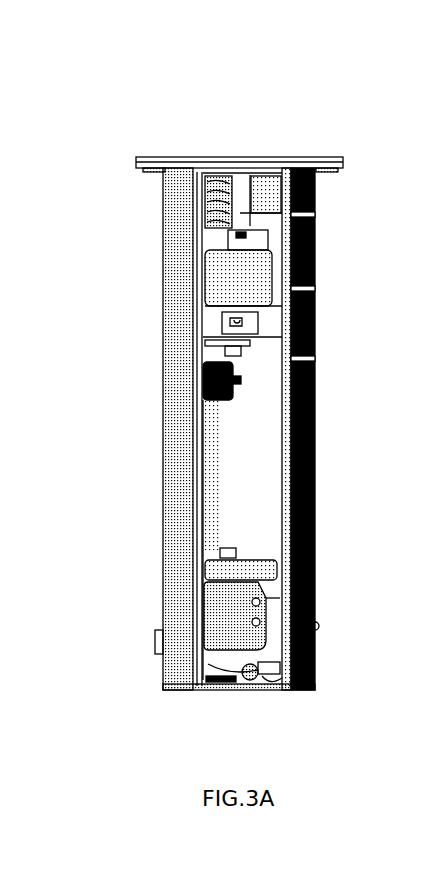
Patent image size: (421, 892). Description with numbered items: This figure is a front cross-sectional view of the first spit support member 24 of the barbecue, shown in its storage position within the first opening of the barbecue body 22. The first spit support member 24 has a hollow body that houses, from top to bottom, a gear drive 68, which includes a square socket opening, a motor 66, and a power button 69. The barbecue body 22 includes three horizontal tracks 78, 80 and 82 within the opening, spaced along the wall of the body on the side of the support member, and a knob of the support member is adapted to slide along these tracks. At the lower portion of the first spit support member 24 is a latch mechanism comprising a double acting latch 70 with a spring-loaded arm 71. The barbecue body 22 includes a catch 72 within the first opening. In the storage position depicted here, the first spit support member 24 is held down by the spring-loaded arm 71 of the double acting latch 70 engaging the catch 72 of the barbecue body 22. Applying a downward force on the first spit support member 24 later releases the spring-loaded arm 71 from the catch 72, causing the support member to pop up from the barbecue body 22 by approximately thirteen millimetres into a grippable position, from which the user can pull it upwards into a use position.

The barbecue body 22 is at (198, 372).
The first spit support member 24 is at (265, 156).
The motor 66 is at (235, 277).
The gear drive 68 is at (215, 194).
The power button 69 is at (215, 380).
The double acting latch 70 is at (225, 627).
The spring-loaded arm 71 is at (245, 676).
The catch 72 is at (268, 675).
The horizontal track 78 is at (310, 358).
The horizontal track 80 is at (310, 288).
The horizontal track 82 is at (310, 214).